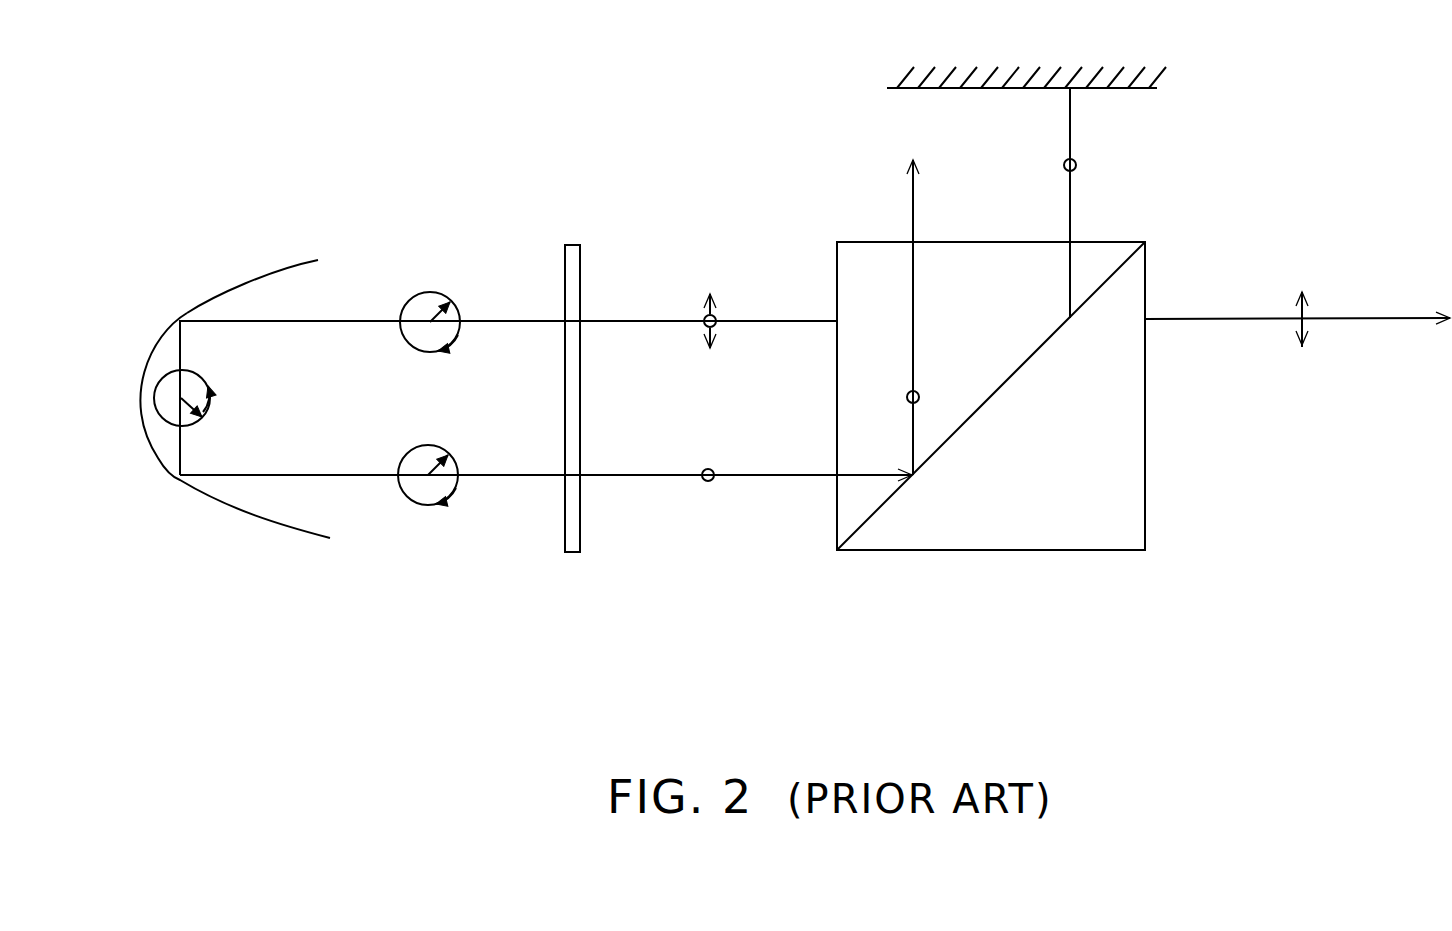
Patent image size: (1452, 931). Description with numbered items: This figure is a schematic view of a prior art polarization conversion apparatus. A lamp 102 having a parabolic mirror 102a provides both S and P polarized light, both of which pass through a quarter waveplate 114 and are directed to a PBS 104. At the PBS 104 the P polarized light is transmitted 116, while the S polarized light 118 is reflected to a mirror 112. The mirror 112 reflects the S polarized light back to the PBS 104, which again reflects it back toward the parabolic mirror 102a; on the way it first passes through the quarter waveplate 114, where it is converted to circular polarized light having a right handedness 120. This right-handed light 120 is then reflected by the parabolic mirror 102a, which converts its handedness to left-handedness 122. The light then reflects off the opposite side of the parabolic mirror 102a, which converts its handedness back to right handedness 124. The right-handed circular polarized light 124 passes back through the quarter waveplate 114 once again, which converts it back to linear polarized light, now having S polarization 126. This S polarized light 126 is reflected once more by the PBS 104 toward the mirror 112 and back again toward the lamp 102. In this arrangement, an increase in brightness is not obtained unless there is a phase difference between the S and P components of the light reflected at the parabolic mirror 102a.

The lamp 102 is at (193, 305).
The parabolic mirror 102a is at (265, 278).
The left-handedness 122 is at (182, 350).
The circular polarized light having a right handedness 120 is at (338, 320).
The right handedness 124 is at (337, 475).
The ¼ waveplate 114 is at (580, 277).
The S polarized light 126 is at (628, 477).
The PBS 104 is at (1055, 553).
The mirror 112 is at (983, 88).
The S polarized light 118 is at (1070, 213).
The transmitted P polarized light 116 is at (1215, 318).